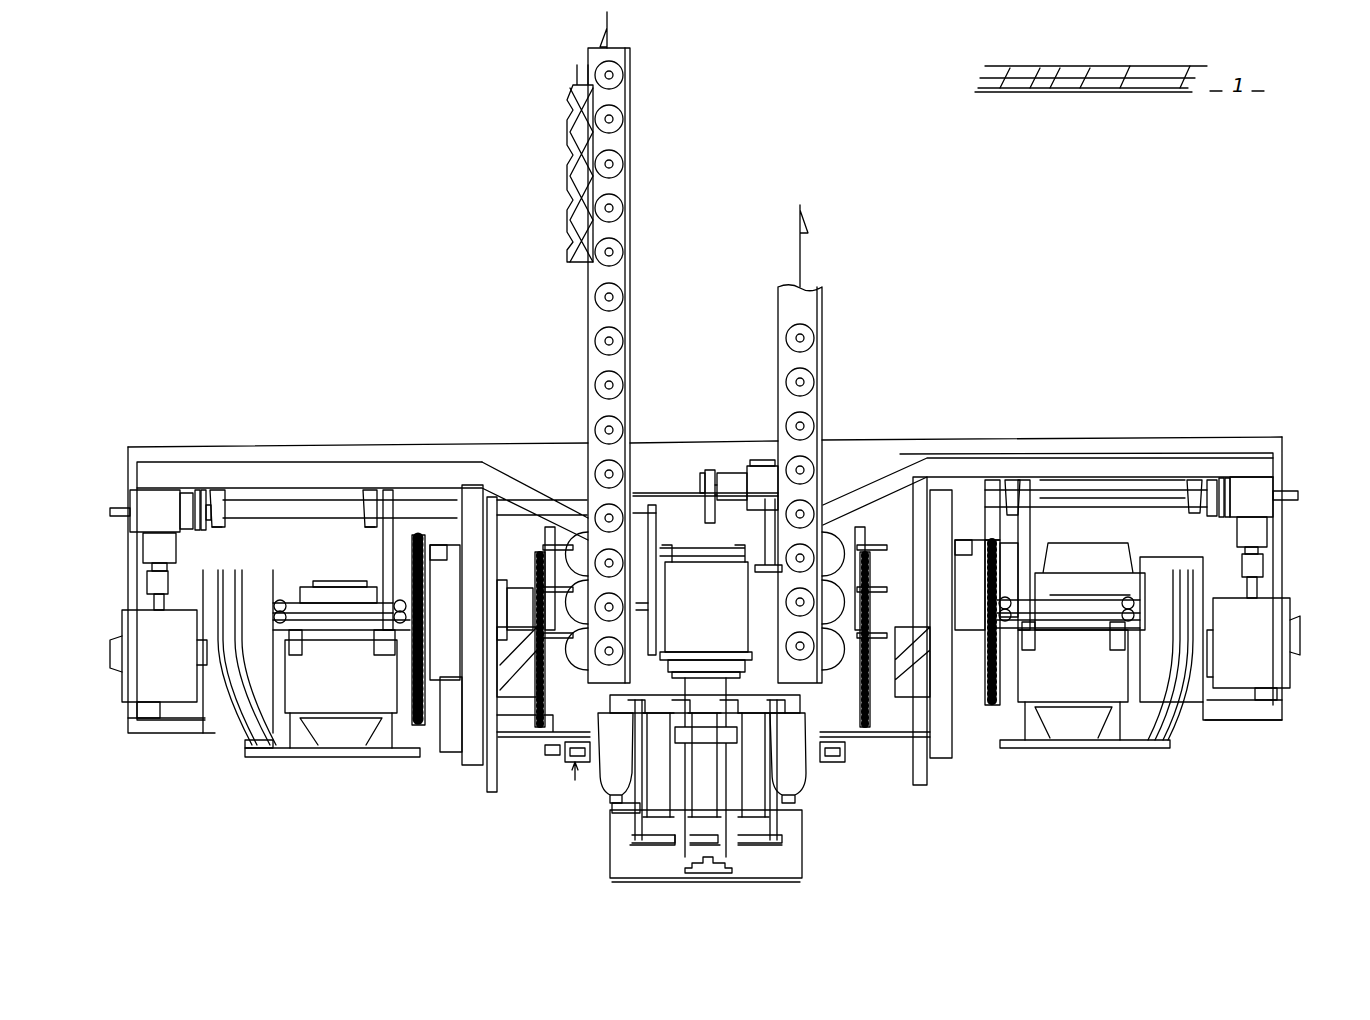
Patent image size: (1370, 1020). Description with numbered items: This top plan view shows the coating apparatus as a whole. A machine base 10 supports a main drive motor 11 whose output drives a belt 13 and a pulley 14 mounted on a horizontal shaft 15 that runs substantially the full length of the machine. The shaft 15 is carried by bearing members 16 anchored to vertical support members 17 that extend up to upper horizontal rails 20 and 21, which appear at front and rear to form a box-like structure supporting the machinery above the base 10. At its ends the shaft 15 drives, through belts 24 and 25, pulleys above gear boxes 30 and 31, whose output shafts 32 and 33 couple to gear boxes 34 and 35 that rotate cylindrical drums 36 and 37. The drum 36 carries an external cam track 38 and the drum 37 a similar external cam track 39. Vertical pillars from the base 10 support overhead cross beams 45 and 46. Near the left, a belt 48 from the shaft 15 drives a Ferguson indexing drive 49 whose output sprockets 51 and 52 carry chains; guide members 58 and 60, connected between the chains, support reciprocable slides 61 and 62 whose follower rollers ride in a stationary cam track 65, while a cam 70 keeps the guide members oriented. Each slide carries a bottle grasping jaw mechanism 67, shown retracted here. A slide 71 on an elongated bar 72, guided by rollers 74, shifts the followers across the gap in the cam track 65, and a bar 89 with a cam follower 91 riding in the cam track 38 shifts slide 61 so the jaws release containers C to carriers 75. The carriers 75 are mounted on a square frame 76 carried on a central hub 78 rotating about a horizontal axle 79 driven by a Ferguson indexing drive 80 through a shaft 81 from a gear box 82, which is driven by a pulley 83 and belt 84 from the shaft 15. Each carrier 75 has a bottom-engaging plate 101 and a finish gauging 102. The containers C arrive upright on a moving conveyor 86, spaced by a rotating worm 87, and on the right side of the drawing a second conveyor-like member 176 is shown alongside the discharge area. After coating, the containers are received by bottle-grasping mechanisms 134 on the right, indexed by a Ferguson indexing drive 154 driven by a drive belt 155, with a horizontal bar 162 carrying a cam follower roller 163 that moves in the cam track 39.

The machine base 10 is at (1275, 441).
The main drive motor 11 is at (1095, 563).
The belt 13 is at (992, 480).
The pulley 14 is at (985, 530).
The horizontal shaft 15 is at (1082, 497).
The bearing members 16 is at (222, 522).
The vertical support members 17 is at (218, 492).
The upper horizontal rail 20 is at (335, 432).
The upper horizontal rail 21 is at (1138, 455).
The belt 24 is at (198, 493).
The belt 25 is at (1215, 480).
The gear box 30 is at (135, 500).
The gear box 31 is at (1262, 487).
The output shaft 32 is at (150, 583).
The output shaft 33 is at (1263, 565).
The gear box 34 is at (140, 678).
The gear box 35 is at (1280, 670).
The cylindrical drum 36 is at (215, 722).
The cylindrical drum 37 is at (1195, 703).
The cam track 38 is at (242, 690).
The cam track 39 is at (1165, 685).
The overhead cross beam 45 is at (472, 762).
The overhead cross beam 46 is at (940, 758).
The belt 48 is at (385, 550).
The Ferguson indexing drive 49 is at (348, 684).
The sprocket 51 is at (418, 725).
The sprocket 52 is at (545, 700).
The guide member 58 is at (515, 738).
The guide member 60 is at (520, 592).
The slide 61 is at (540, 742).
The slide 62 is at (532, 620).
The stationary cam track 65 is at (470, 665).
The bottle grasping jaw mechanism 67 is at (555, 432).
The cam 70 is at (492, 790).
The slide 71 is at (427, 560).
The elongated bar 72 is at (330, 608).
The rollers 74 is at (283, 603).
The carriers 75 is at (645, 850).
The square frame 76 is at (730, 828).
The central hub 78 is at (688, 850).
The horizontal axle 79 is at (708, 873).
The Ferguson indexing drive 80 is at (716, 612).
The shaft 81 is at (765, 526).
The gear box 82 is at (760, 480).
The pulley 83 is at (700, 490).
The belt 84 is at (710, 470).
The moving conveyor 86 is at (618, 318).
The rotating worm 87 is at (568, 152).
The bar 89 is at (340, 757).
The cam follower 91 is at (262, 757).
The bottom-engaging plate 101 is at (600, 712).
The finish gauging 102 is at (612, 808).
The bottle-grasping mechanism 134 is at (868, 528).
The Ferguson indexing drive 154 is at (1090, 678).
The drive belt 155 is at (1025, 535).
The elongated horizontal bar 162 is at (1075, 748).
The cam follower roller 163 is at (1150, 735).
The container conveyor column 176 is at (805, 302).
The containers C is at (620, 76).